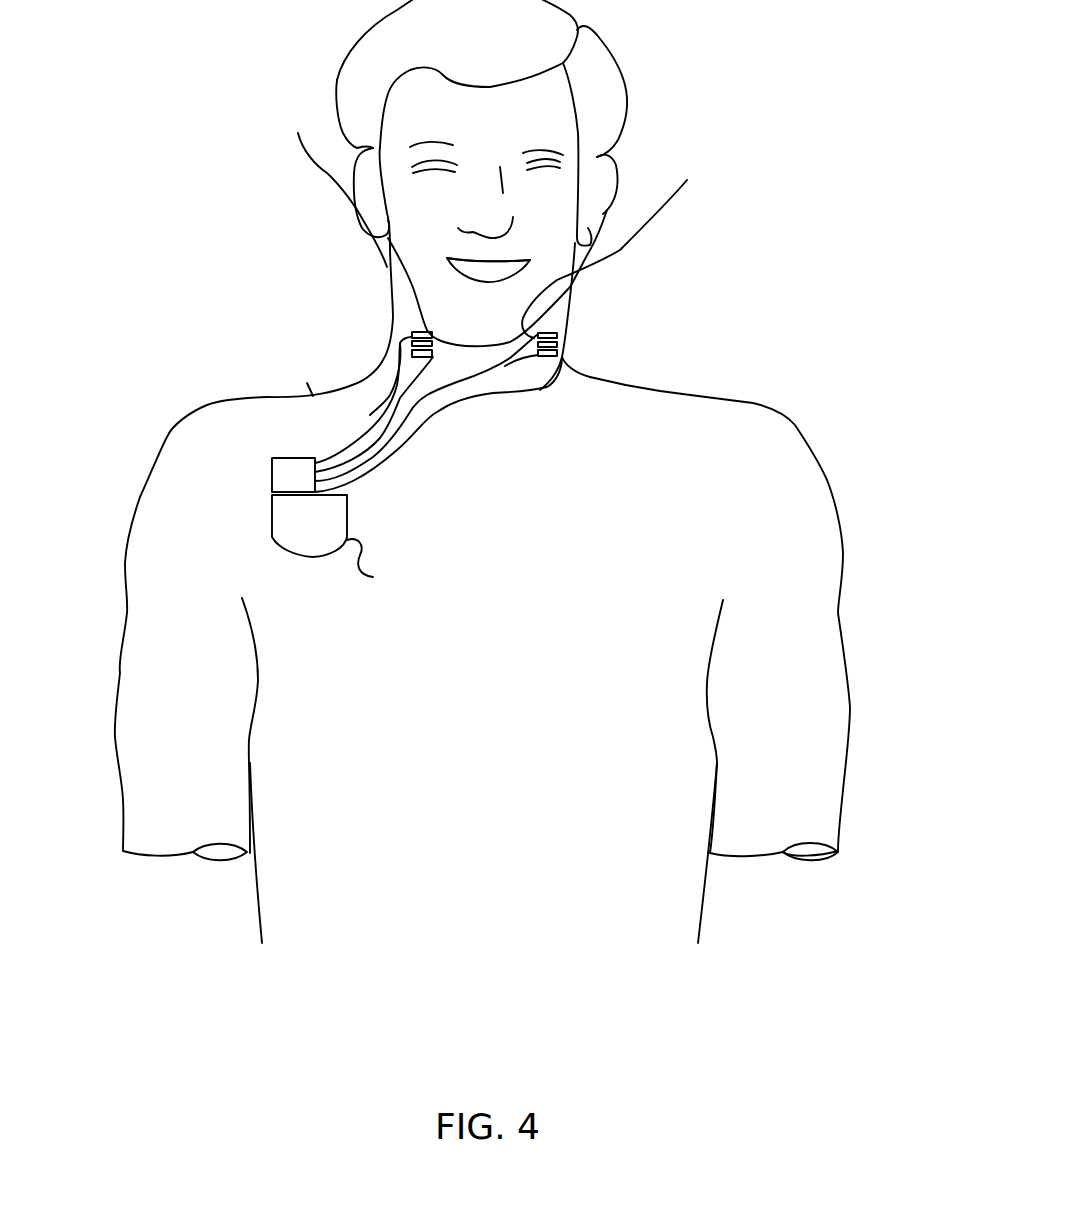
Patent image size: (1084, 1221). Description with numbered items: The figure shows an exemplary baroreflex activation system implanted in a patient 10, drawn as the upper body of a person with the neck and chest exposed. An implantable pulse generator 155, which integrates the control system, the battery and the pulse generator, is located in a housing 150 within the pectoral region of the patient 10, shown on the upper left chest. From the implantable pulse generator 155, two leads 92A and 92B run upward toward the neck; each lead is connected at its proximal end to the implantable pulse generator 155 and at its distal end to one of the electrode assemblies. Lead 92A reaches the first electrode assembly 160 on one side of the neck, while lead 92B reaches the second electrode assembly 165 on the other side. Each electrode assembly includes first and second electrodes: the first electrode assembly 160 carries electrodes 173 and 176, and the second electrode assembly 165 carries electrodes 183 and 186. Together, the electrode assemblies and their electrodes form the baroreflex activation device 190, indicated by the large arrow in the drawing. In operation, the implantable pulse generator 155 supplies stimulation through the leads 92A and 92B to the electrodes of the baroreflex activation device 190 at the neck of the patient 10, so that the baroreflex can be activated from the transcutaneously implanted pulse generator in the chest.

The patient 10 is at (733, 400).
The lead 92A is at (520, 375).
The lead 92B is at (364, 395).
The housing 150 is at (379, 577).
The implantable pulse generator 155 is at (292, 558).
The first electrode assembly 160 is at (590, 303).
The second electrode assembly 165 is at (378, 314).
The first electrode 173 is at (632, 239).
The second electrode 176 is at (545, 333).
The first electrode 183 is at (412, 336).
The second electrode 186 is at (316, 180).
The baroreflex activation device 190 is at (426, 434).